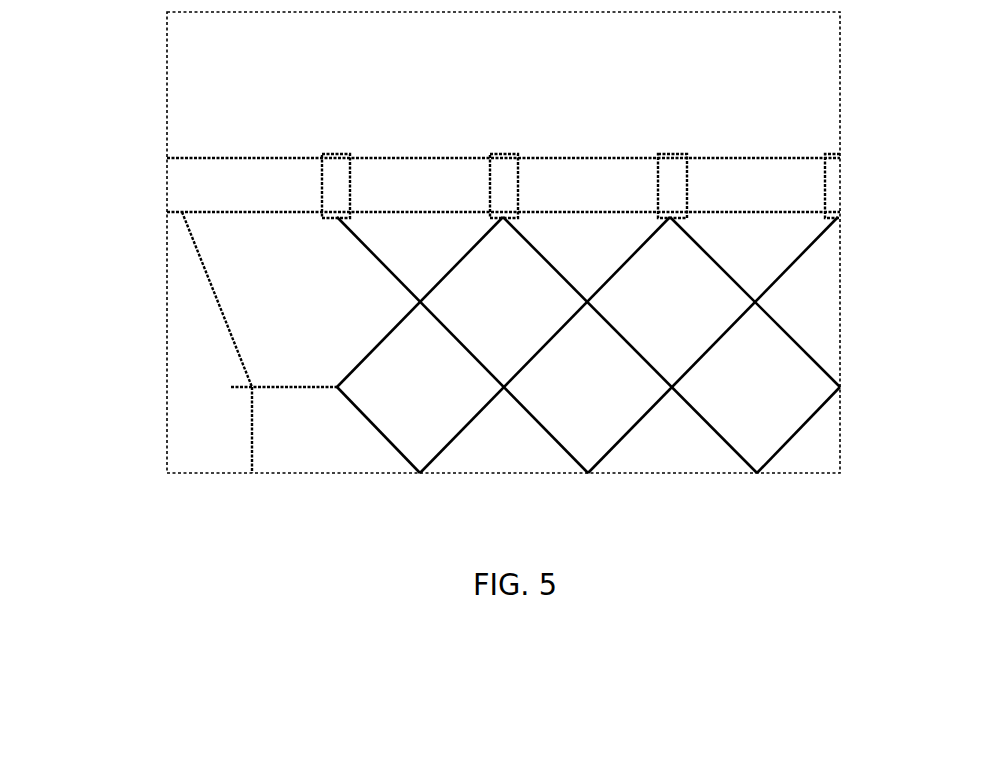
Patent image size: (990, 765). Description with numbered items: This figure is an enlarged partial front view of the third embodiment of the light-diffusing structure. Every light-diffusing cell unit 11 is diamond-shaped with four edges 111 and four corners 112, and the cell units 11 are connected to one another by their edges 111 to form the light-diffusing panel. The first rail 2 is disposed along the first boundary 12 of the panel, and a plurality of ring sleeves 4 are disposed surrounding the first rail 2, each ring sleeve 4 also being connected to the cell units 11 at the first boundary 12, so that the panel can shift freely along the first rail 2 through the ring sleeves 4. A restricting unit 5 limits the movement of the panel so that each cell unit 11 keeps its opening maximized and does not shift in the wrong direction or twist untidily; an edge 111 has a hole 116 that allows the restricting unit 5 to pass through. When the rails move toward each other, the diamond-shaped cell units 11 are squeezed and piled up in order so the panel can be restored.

The first rail 2 is at (792, 189).
The ring sleeve 4 is at (672, 180).
The restricting unit 5 is at (216, 299).
The light-diffusing cell unit 11 is at (663, 345).
The edge 111 is at (935, 272).
The corner 112 is at (757, 302).
The first boundary 12 is at (323, 214).
The hole 116 is at (249, 391).